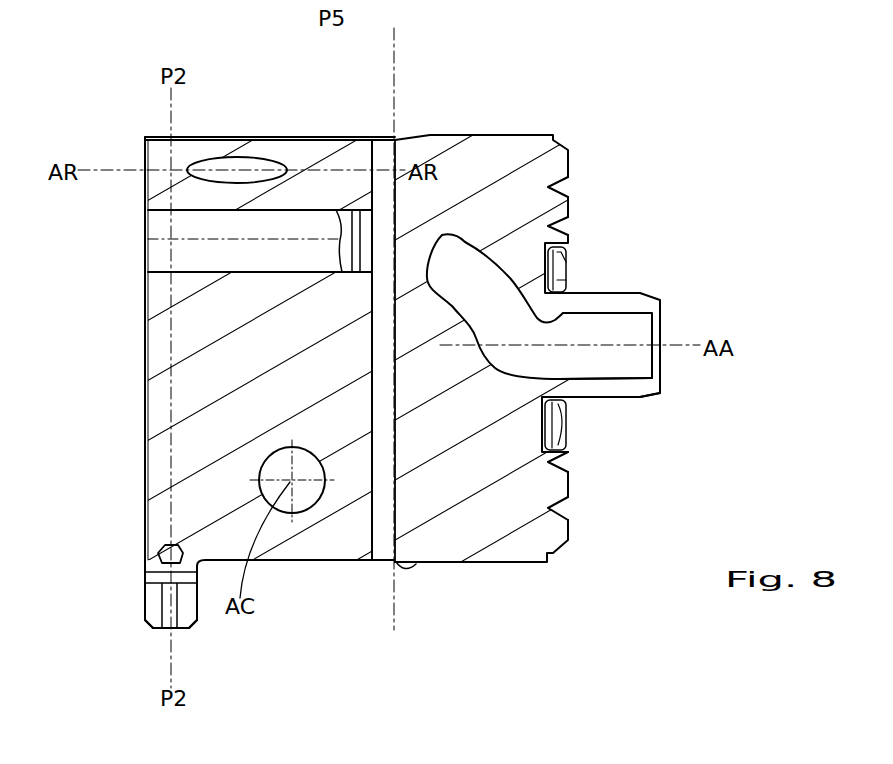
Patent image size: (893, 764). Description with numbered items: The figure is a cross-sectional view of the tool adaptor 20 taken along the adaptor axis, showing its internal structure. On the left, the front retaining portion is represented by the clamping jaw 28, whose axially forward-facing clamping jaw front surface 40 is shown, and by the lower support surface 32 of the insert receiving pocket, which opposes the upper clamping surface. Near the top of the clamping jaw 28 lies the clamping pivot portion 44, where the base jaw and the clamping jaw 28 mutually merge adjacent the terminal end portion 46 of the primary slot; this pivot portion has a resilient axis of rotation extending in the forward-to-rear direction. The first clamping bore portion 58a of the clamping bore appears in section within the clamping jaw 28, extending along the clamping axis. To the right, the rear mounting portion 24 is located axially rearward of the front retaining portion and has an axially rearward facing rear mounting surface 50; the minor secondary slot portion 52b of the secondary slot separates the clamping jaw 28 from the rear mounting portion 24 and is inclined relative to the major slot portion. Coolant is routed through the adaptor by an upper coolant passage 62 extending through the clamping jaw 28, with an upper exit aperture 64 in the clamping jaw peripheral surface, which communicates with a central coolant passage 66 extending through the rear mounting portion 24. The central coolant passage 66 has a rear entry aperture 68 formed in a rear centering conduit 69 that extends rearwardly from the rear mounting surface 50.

The tool adaptor 20 is at (380, 372).
The rear mounting portion 24 is at (568, 347).
The clamping jaw 28 is at (196, 330).
The lower support surface 32 is at (158, 607).
The clamping jaw front surface 40 is at (207, 372).
The clamping pivot portion 44 is at (190, 152).
The terminal end portion 46 is at (185, 221).
The rear mounting surface 50 is at (575, 196).
The minor secondary slot portion 52b is at (382, 525).
The first clamping bore portion 58a is at (298, 490).
The upper coolant passage 62 is at (253, 166).
The upper exit aperture 64 is at (160, 556).
The central coolant passage 66 is at (447, 260).
The rear entry aperture 68 is at (665, 338).
The rear centering conduit 69 is at (620, 388).